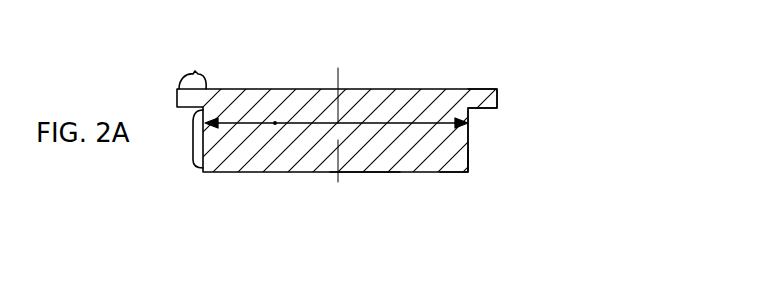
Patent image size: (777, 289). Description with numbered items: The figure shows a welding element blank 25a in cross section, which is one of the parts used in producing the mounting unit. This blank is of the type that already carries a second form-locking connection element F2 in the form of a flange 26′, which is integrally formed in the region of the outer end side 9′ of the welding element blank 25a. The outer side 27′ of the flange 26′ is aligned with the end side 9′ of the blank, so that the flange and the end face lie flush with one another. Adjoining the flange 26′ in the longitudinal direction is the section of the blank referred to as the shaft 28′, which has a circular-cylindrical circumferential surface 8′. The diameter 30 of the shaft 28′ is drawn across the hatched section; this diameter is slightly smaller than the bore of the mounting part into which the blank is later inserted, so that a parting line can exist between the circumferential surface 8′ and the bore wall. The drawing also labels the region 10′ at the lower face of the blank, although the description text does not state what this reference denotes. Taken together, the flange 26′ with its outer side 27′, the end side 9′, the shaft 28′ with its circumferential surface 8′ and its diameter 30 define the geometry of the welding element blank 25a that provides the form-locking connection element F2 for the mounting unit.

The outer end side 9′ is at (360, 89).
The flange 26′ is at (496, 98).
The outer side of the flange 27′ is at (196, 70).
The shaft 28′ is at (193, 136).
The second form-locking connection element F2 is at (177, 91).
The diameter of the shaft 30 is at (275, 123).
The welding element blank 25a is at (468, 143).
The circumferential surface 8′ is at (468, 157).
The bottom surface 10′ is at (358, 173).